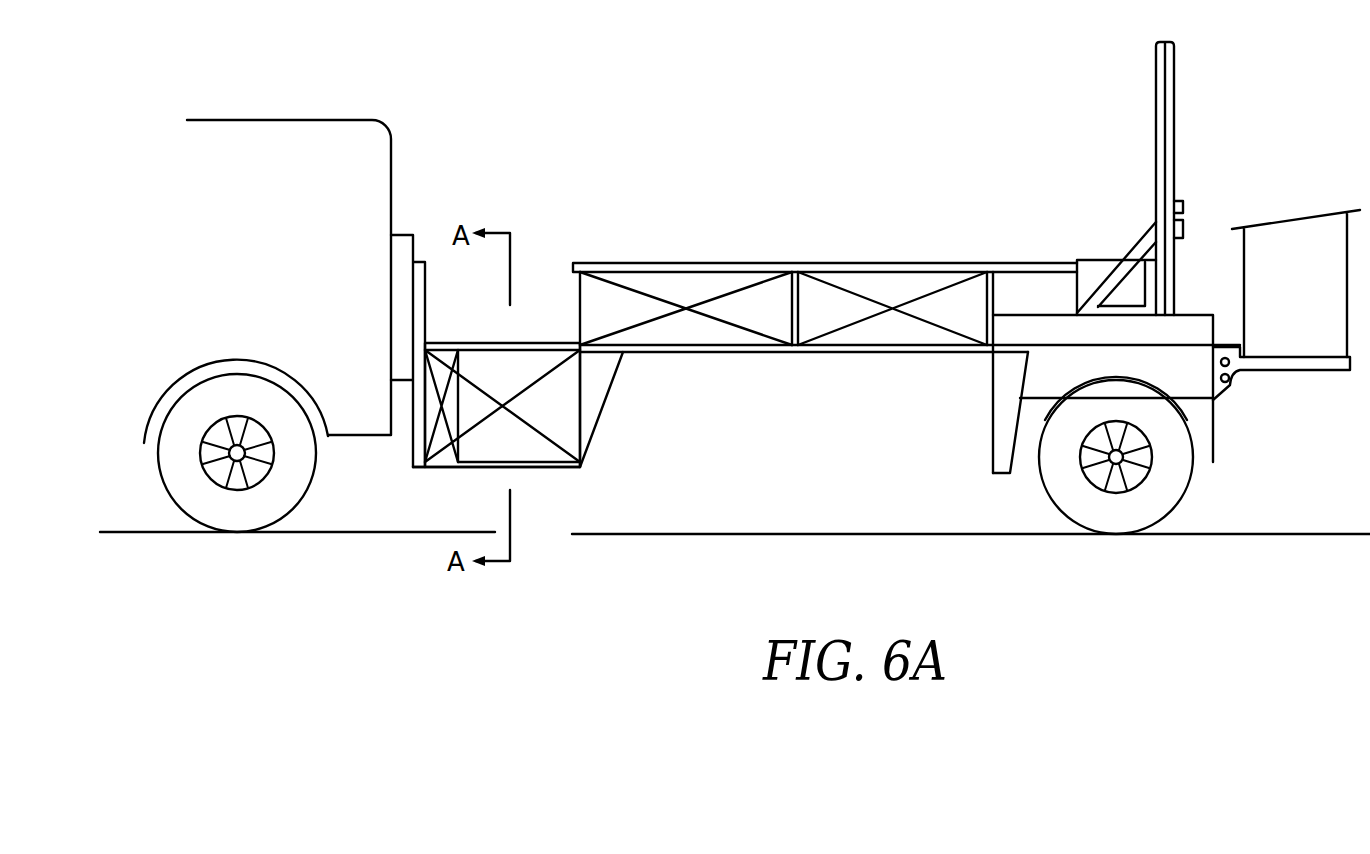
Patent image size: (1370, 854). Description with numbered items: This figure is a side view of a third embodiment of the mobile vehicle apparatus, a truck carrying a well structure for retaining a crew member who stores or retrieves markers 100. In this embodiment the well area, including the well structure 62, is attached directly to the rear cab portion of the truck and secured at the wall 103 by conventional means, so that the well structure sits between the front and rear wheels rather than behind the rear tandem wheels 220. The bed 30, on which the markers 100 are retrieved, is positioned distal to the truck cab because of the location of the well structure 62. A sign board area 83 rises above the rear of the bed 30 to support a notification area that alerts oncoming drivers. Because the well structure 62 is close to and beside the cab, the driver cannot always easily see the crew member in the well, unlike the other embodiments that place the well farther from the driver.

The bed 30 is at (853, 247).
The second well structure 62 is at (502, 362).
The sign board area 83 is at (1195, 163).
The markers 100 is at (580, 468).
The wall 103 is at (393, 452).
The rear tandem wheels 220 is at (1168, 473).